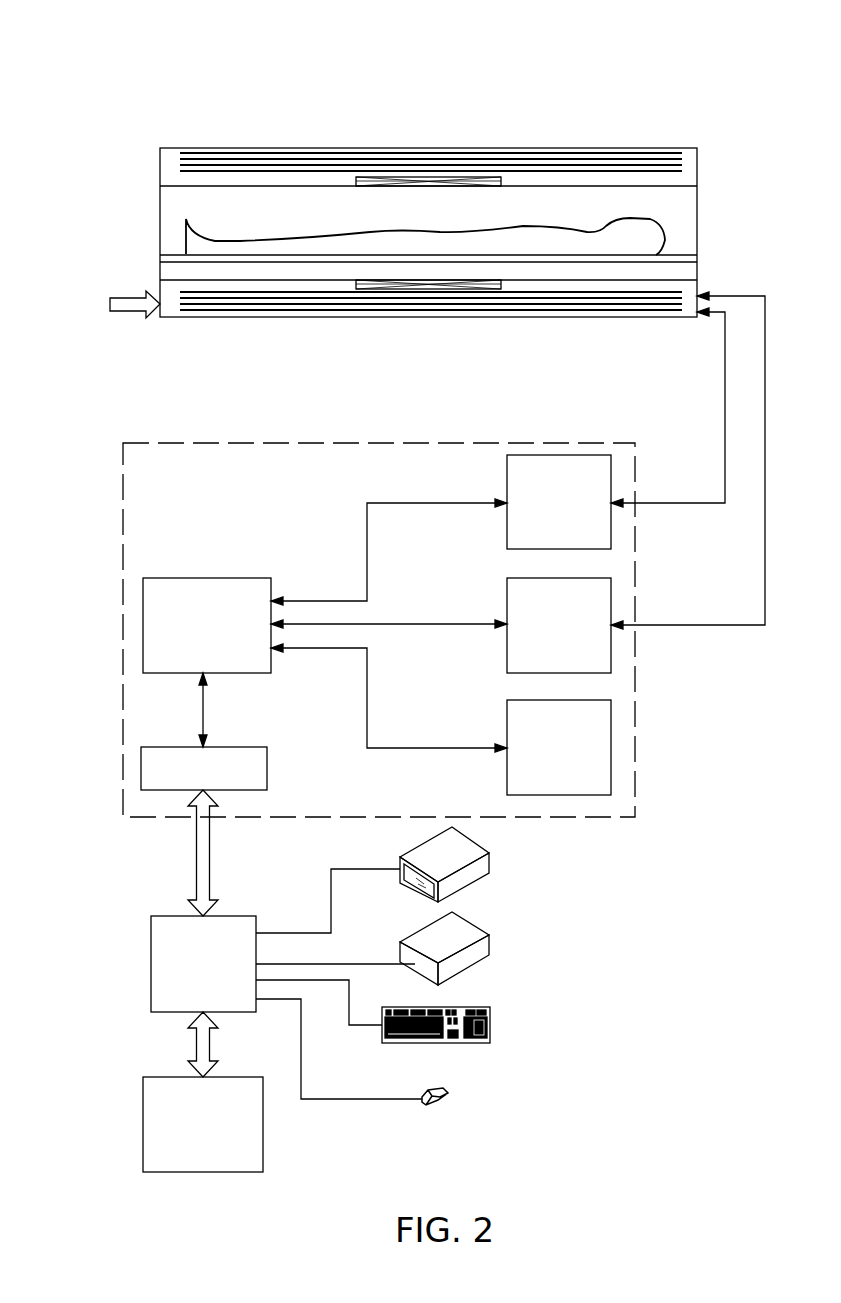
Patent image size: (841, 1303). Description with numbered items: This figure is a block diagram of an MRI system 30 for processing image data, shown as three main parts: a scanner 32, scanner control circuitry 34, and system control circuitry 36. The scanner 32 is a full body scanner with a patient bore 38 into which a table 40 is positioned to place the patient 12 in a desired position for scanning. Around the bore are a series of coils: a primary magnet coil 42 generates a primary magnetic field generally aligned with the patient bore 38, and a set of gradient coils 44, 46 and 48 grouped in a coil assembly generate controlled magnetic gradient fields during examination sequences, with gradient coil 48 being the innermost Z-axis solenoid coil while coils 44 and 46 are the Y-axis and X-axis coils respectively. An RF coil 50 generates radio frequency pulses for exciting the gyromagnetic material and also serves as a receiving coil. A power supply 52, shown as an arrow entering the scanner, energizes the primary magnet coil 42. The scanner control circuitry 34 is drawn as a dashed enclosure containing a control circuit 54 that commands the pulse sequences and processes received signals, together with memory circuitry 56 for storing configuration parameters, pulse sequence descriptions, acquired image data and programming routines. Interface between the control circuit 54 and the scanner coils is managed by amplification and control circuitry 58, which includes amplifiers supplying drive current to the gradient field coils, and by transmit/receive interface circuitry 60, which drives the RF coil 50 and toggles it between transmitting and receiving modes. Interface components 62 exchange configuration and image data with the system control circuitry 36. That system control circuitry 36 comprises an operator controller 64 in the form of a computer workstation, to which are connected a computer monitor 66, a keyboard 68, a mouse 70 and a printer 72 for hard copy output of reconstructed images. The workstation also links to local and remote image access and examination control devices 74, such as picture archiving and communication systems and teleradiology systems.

The patient 12 is at (235, 243).
The MRI system 30 is at (708, 58).
The scanner 32 is at (697, 210).
The scanner control circuitry 34 is at (333, 443).
The system control circuitry 36 is at (600, 952).
The patient bore 38 is at (167, 268).
The table 40 is at (172, 253).
The primary magnet coil 42 is at (477, 148).
The gradient coil 44 is at (525, 156).
The gradient coil 46 is at (575, 163).
The gradient coil 48 is at (620, 169).
The RF coil 50 is at (432, 176).
The power supply 52 is at (110, 305).
The control circuit 54 is at (207, 578).
The memory circuitry 56 is at (611, 748).
The amplification and control circuitry 58 is at (553, 455).
The transmit/receive interface circuitry 60 is at (611, 598).
The interface components 62 is at (243, 747).
The operator controller 64 is at (151, 963).
The computer monitor 66 is at (490, 860).
The computer keyboard 68 is at (490, 1025).
The mouse 70 is at (447, 1100).
The printer 72 is at (490, 945).
The image access and examination control devices 74 is at (143, 1125).